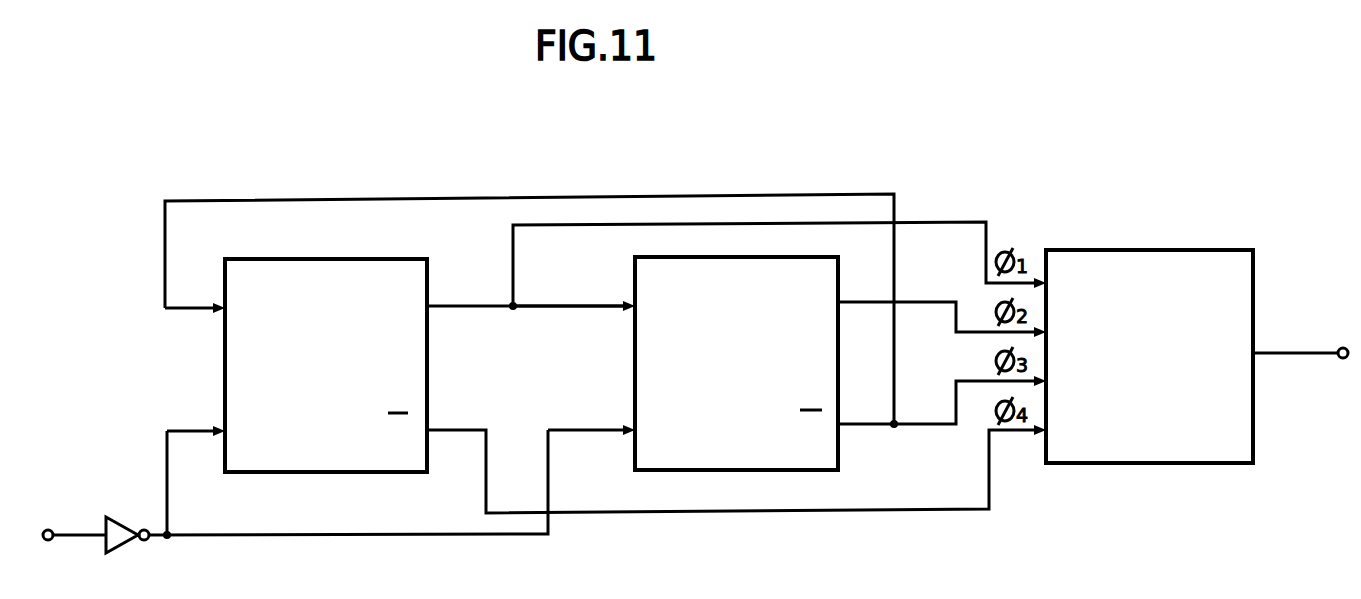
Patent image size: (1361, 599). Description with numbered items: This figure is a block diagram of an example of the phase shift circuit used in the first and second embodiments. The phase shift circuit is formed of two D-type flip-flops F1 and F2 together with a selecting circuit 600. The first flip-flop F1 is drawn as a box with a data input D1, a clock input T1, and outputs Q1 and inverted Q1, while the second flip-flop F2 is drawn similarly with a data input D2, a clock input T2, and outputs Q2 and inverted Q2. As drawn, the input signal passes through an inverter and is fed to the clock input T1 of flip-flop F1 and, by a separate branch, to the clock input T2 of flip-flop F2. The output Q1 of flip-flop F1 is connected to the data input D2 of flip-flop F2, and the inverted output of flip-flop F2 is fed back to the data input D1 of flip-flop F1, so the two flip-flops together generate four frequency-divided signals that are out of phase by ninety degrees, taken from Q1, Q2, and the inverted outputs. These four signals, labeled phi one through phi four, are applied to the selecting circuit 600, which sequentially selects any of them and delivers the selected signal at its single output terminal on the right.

The selecting circuit 600 is at (1145, 250).
The D-type flip-flop F1 is at (307, 365).
The D-type flip-flop F2 is at (691, 363).
The data input of first flip-flop D1 is at (213, 308).
The output of first flip-flop Q1 is at (416, 308).
The clock input of first flip-flop T1 is at (213, 430).
The data input of second flip-flop D2 is at (592, 305).
The output of second flip-flop Q2 is at (831, 305).
The clock input of second flip-flop T2 is at (609, 428).